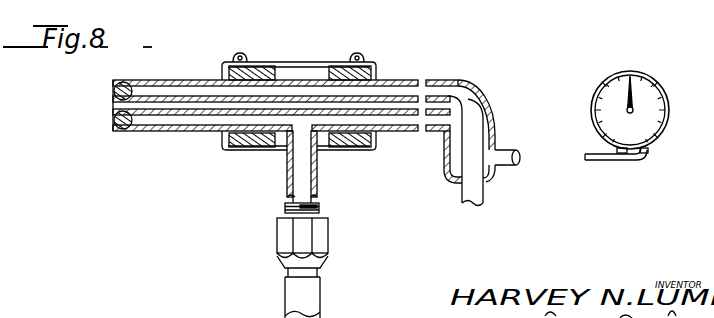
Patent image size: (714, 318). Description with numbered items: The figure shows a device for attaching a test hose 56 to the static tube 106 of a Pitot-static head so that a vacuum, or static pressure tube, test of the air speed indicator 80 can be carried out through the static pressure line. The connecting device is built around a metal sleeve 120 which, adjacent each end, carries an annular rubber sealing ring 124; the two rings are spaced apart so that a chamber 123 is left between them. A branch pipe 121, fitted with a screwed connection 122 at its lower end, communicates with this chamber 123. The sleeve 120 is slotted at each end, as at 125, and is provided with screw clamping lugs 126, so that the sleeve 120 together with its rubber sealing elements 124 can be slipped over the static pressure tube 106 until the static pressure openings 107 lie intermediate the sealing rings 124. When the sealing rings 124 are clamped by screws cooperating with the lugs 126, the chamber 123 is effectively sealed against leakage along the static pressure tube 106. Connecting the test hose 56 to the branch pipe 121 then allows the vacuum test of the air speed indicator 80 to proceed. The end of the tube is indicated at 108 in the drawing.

The test hose 56 is at (318, 297).
The air speed indicator 80 is at (662, 91).
The static tube 106 is at (398, 133).
The static pressure openings 107 is at (286, 145).
The tube end plug 108 is at (112, 132).
The metal sleeve 120 is at (299, 64).
The branch pipe 121 is at (313, 179).
The screwed connection 122 is at (322, 213).
The chamber 123 is at (321, 73).
The annular rubber sealing ring 124 is at (226, 72).
The slot 125 is at (241, 56).
The screw clamping lug 126 is at (243, 61).